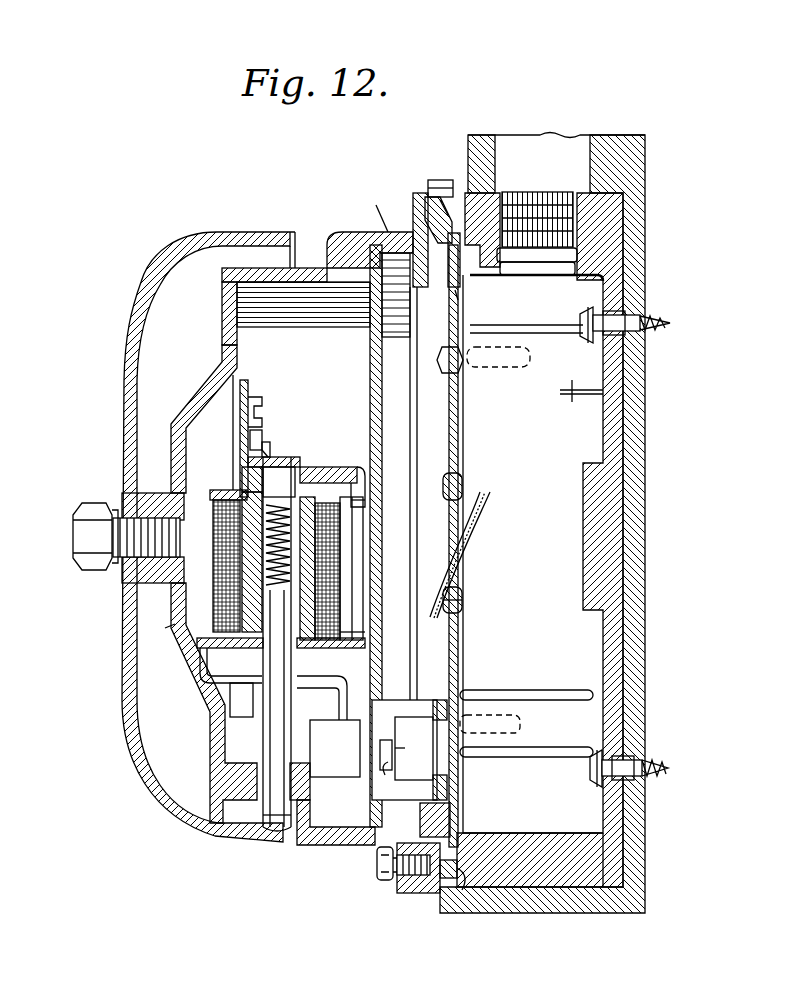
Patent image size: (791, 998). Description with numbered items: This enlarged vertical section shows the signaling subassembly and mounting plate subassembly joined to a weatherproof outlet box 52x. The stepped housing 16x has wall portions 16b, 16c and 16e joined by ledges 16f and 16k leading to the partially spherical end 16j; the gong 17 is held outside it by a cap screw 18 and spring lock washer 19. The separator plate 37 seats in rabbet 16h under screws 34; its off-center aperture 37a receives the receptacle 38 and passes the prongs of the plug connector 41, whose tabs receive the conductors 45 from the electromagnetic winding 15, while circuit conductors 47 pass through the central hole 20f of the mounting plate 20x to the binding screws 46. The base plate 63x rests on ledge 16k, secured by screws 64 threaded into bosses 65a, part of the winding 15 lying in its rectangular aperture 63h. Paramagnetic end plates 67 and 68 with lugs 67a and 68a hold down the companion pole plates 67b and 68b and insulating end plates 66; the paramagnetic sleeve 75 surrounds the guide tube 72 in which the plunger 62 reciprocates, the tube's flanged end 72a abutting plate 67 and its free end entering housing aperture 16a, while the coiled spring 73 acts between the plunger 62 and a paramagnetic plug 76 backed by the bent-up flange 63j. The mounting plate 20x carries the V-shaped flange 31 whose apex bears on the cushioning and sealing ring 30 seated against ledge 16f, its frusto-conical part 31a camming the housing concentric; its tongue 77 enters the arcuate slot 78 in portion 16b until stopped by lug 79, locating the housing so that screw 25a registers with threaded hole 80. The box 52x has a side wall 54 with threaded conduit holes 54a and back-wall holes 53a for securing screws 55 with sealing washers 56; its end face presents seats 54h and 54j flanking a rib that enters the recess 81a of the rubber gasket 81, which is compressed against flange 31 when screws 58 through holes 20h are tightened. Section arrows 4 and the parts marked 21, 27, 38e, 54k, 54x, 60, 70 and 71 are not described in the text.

The section line 4 is at (367, 690).
The electromagnetic winding 15 is at (325, 572).
The housing wall aperture 16a is at (215, 790).
The end casing portion 16b is at (453, 232).
The cylindrical wall portion 16c is at (352, 233).
The wall portion 16e is at (258, 268).
The annular wall portion 16f is at (376, 205).
The internal step or rabbet 16h is at (362, 285).
The partially-spherical end portion 16j is at (183, 392).
The lateral wall portion 16k is at (225, 318).
The housing 16x is at (227, 263).
The gong 17 is at (238, 835).
The cap screw 18 is at (79, 540).
The spring lock washer 19 is at (106, 572).
The central round hole 20f is at (463, 582).
The holes 20h is at (462, 280).
The mounting plate 20x is at (464, 442).
The shaft end 21 is at (285, 830).
The screw 25a is at (385, 877).
The screw shank 27 is at (400, 890).
The cushioning and sealing ring 30 is at (400, 244).
The V-shaped flange 31 is at (414, 206).
The frusto-conical part 31a is at (455, 206).
The screws 34 is at (396, 295).
The separator plate 37 is at (368, 350).
The aperture 37a is at (372, 794).
The receptacle part 38 is at (393, 696).
The switch housing inner 38e is at (411, 748).
The plug connector element 41 is at (336, 765).
The conductors 45 is at (198, 650).
The binding screws 46 is at (390, 768).
The circuit conductors 47 is at (497, 505).
The outlet box 52x is at (613, 494).
The holes 53a is at (614, 307).
The side wall 54 is at (532, 870).
The threaded holes 54a is at (553, 197).
The annular ledge 54h is at (467, 840).
The annular ledge 54j is at (447, 880).
The bracket side face 54k is at (485, 838).
The spring seat 54x is at (482, 272).
The securing screws 55 is at (640, 330).
The sealing washers 56 is at (588, 306).
The screws 58 is at (448, 368).
The guide rod 60 is at (577, 382).
The plunger 62 is at (277, 644).
The rectangular aperture 63h is at (243, 478).
The bent-up flange 63j is at (266, 448).
The base plate 63x is at (233, 412).
The screws 64 is at (258, 405).
The bosses 65a is at (246, 385).
The insulating end plates 66 is at (214, 492).
The upper end plate 67 is at (328, 467).
The lug 67a is at (358, 493).
The companion pole extension plate 67b is at (356, 474).
The lower end plate 68 is at (370, 645).
The lug 68a is at (355, 640).
The companion pole extension plate 68b is at (352, 625).
The bracket 70 is at (250, 440).
The spacer 71 is at (266, 439).
The guide tube 72 is at (292, 690).
The flanged end 72a is at (300, 457).
The coiled spring 73 is at (278, 570).
The annular paramagnetic sleeve 75 is at (225, 540).
The plug 76 is at (279, 482).
The tongue 77 is at (437, 180).
The arcuate slot 78 is at (432, 200).
The lug 79 is at (482, 230).
The threaded hole 80 is at (420, 894).
The gasket 81 is at (452, 288).
The annular recess 81a is at (463, 879).